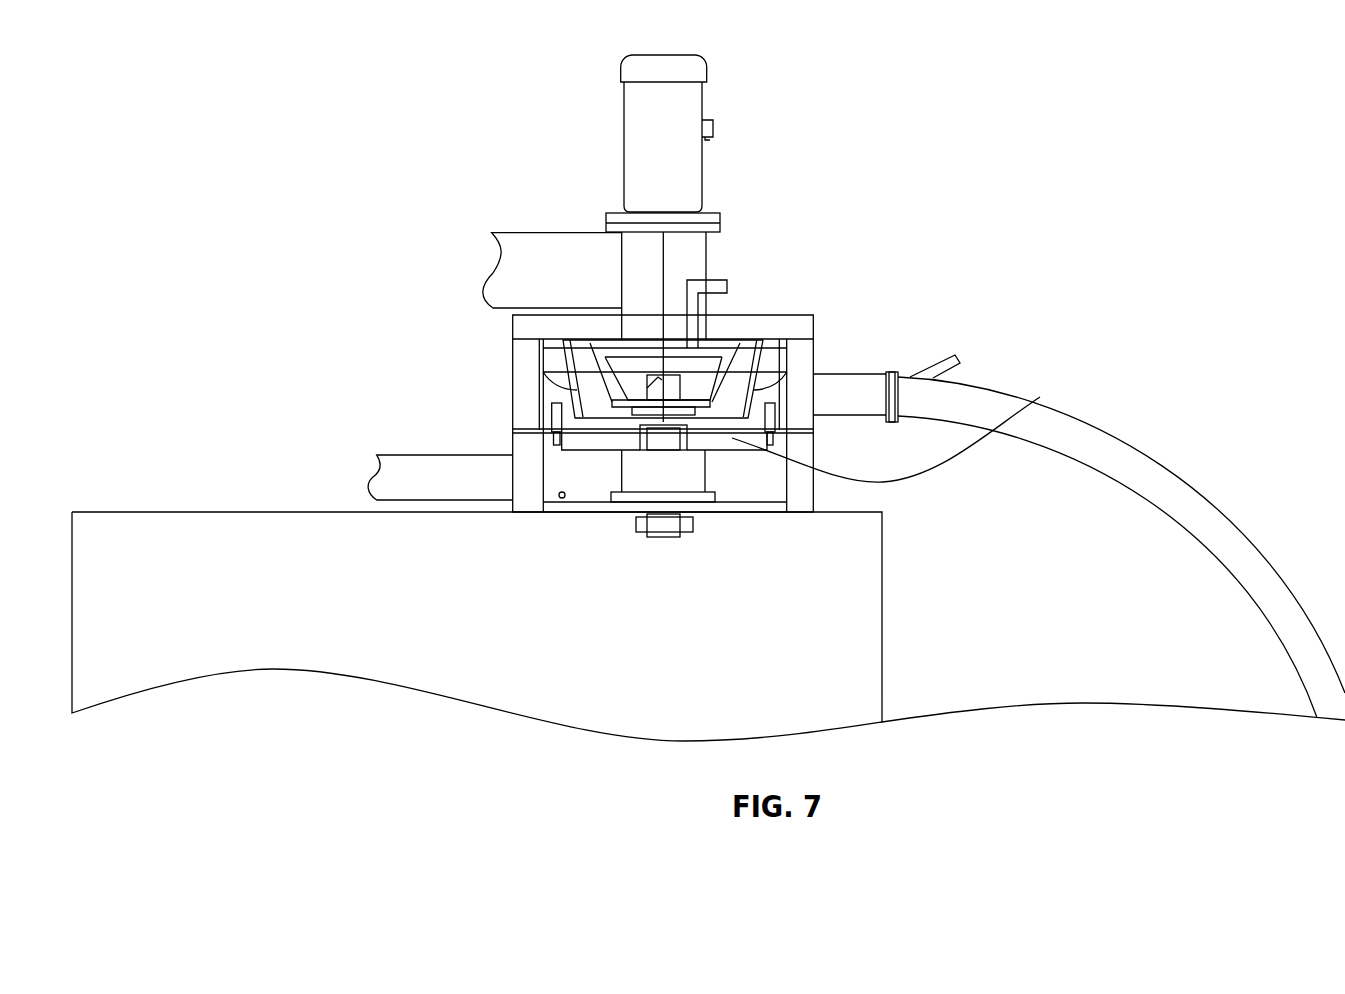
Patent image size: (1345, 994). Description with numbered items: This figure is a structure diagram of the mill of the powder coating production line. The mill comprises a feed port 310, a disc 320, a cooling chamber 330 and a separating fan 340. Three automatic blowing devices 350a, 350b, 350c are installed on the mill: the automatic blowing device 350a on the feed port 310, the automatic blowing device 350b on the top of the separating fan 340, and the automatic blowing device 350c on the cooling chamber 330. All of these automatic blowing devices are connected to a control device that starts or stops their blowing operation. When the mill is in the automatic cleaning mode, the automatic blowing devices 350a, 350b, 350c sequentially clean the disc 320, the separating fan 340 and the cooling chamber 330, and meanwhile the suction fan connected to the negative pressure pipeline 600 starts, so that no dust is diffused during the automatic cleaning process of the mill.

The feed port 310 is at (815, 397).
The disc 320 is at (1040, 397).
The cooling chamber 330 is at (562, 470).
The separating fan 340 is at (600, 380).
The automatic blowing device 350a is at (955, 355).
The automatic blowing device 350b is at (710, 280).
The automatic blowing device 350c is at (558, 493).
The negative pressure pipeline 600 is at (1133, 467).